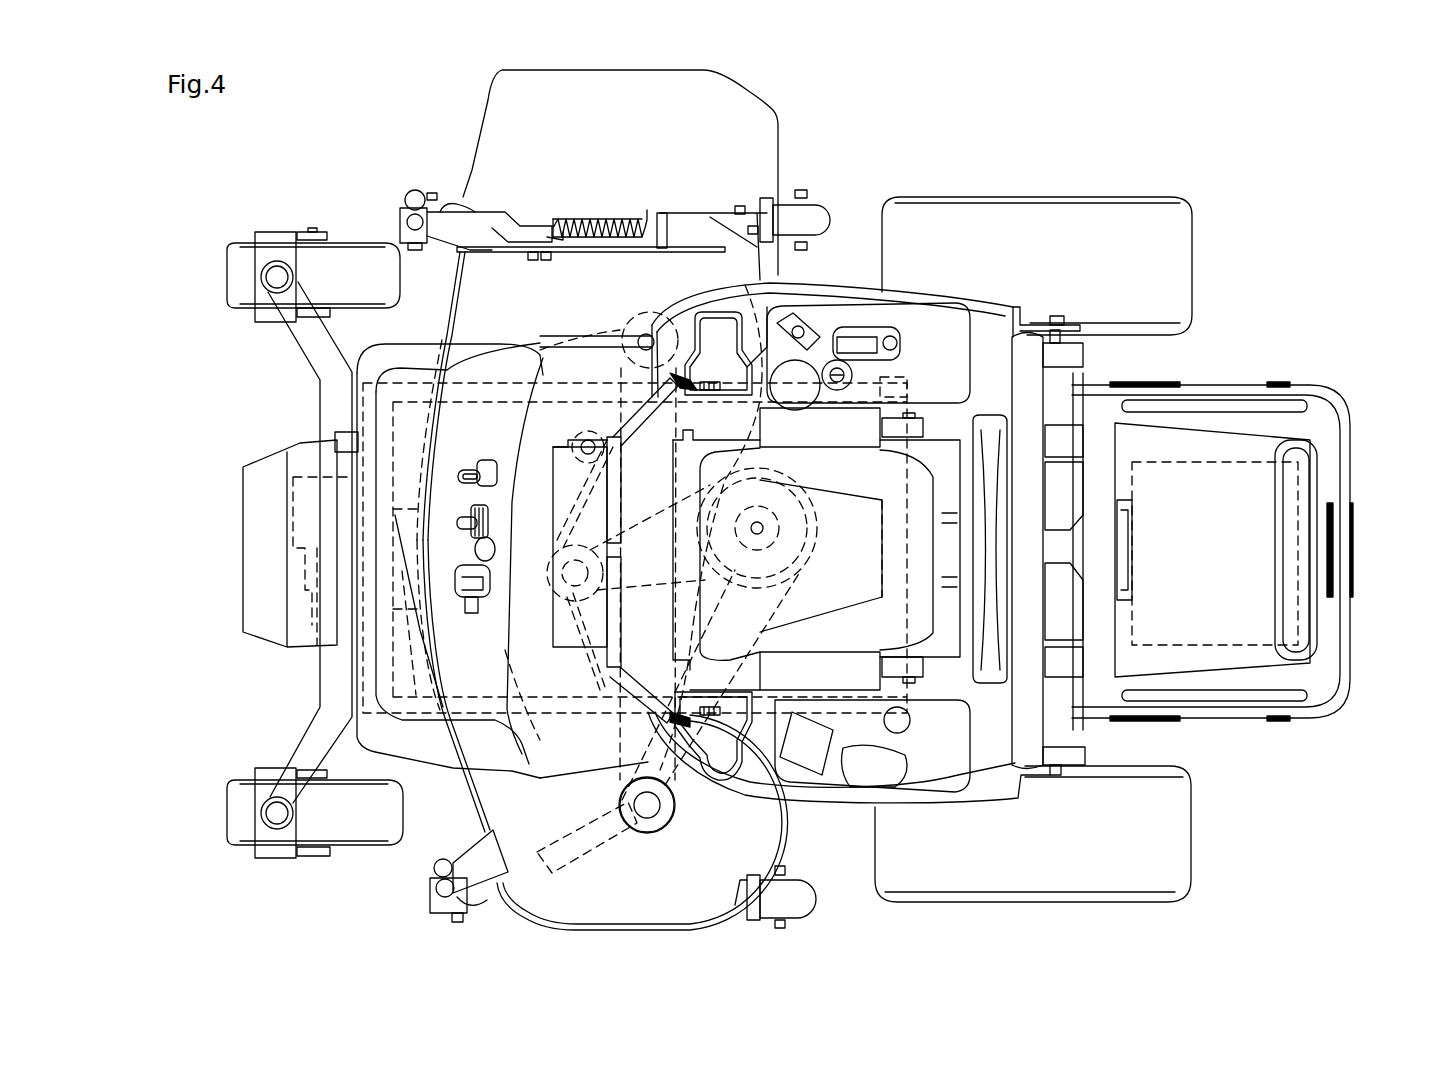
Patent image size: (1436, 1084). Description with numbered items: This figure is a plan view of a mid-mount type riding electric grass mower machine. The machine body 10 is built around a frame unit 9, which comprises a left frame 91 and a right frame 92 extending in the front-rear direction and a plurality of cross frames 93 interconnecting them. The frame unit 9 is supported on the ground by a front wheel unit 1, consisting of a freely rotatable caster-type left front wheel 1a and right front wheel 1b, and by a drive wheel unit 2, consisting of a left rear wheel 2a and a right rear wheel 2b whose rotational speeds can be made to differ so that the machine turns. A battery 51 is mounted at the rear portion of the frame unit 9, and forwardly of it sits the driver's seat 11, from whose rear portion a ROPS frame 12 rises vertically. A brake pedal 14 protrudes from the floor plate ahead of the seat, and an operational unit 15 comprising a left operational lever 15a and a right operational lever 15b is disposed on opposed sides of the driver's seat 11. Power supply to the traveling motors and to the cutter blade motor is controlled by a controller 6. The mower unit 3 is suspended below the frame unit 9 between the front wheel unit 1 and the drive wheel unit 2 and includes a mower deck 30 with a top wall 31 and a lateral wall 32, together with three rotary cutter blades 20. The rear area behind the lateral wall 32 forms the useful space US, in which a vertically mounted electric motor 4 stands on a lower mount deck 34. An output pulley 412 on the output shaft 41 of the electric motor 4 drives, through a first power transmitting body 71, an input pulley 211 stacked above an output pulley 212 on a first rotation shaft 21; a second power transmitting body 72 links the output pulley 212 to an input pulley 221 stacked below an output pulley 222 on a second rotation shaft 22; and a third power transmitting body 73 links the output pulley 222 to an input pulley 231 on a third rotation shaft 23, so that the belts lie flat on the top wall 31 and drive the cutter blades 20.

The front wheel unit 1 is at (290, 548).
The left front wheel 1a is at (232, 826).
The right front wheel 1b is at (232, 253).
The drive wheel unit 2 is at (1095, 522).
The left rear wheel 2a is at (1187, 835).
The right rear wheel 2b is at (1128, 215).
The mower unit 3 is at (382, 183).
The electric motor 4 is at (808, 520).
The controller 6 is at (1300, 498).
The frame unit 9 is at (362, 415).
The machine body 10 is at (857, 193).
The driver's seat 11 is at (925, 455).
The ROPS frame 12 is at (1020, 341).
The brake pedal 14 is at (485, 462).
The operational unit 15 is at (637, 549).
The left operational lever 15a is at (592, 700).
The right operational lever 15b is at (612, 445).
The cutter blade 20 is at (745, 298).
The first rotation shaft 21 is at (658, 813).
The second rotation shaft 22 is at (570, 560).
The third rotation shaft 23 is at (643, 338).
The mower deck 30 is at (469, 793).
The top wall 31 is at (762, 832).
The lateral wall 32 is at (773, 843).
The mount deck 34 is at (815, 498).
The output shaft 41 is at (788, 550).
The battery 51 is at (1302, 425).
The first power transmitting body 71 is at (690, 628).
The second power transmitting body 72 is at (628, 790).
The third power transmitting body 73 is at (580, 482).
The left frame 91 is at (465, 779).
The right frame 92 is at (471, 375).
The cross frame 93 is at (355, 455).
The input pulley 211 is at (645, 833).
The output pulley 212 is at (647, 805).
The input pulley 221 is at (548, 574).
The output pulley 222 is at (575, 573).
The input pulley 231 is at (646, 320).
The output pulley 412 is at (762, 492).
The useful space US is at (782, 612).